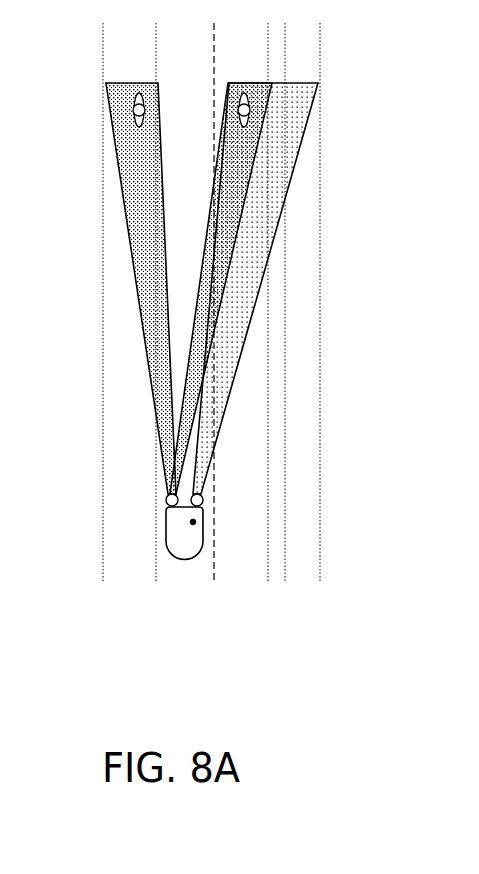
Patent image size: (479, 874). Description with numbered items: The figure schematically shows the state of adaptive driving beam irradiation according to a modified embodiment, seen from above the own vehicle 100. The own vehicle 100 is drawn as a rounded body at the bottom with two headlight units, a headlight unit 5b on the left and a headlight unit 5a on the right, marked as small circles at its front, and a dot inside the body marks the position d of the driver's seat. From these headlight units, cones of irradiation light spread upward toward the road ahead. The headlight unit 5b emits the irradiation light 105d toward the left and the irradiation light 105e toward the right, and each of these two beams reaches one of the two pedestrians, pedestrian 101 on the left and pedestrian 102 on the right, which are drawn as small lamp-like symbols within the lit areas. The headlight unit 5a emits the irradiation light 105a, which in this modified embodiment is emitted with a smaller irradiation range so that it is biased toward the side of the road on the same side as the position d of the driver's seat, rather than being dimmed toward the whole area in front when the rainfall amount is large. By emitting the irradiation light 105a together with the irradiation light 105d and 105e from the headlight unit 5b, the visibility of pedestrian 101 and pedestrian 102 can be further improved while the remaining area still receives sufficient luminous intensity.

The pedestrian 101 is at (137, 110).
The pedestrian 102 is at (246, 110).
The irradiation light 105d is at (127, 197).
The irradiation light 105e is at (243, 205).
The irradiation light 105a is at (253, 300).
The headlight unit 5a is at (203, 500).
The headlight unit 5b is at (166, 500).
The own vehicle 100 is at (187, 548).
The position of the driver's seat d is at (193, 522).